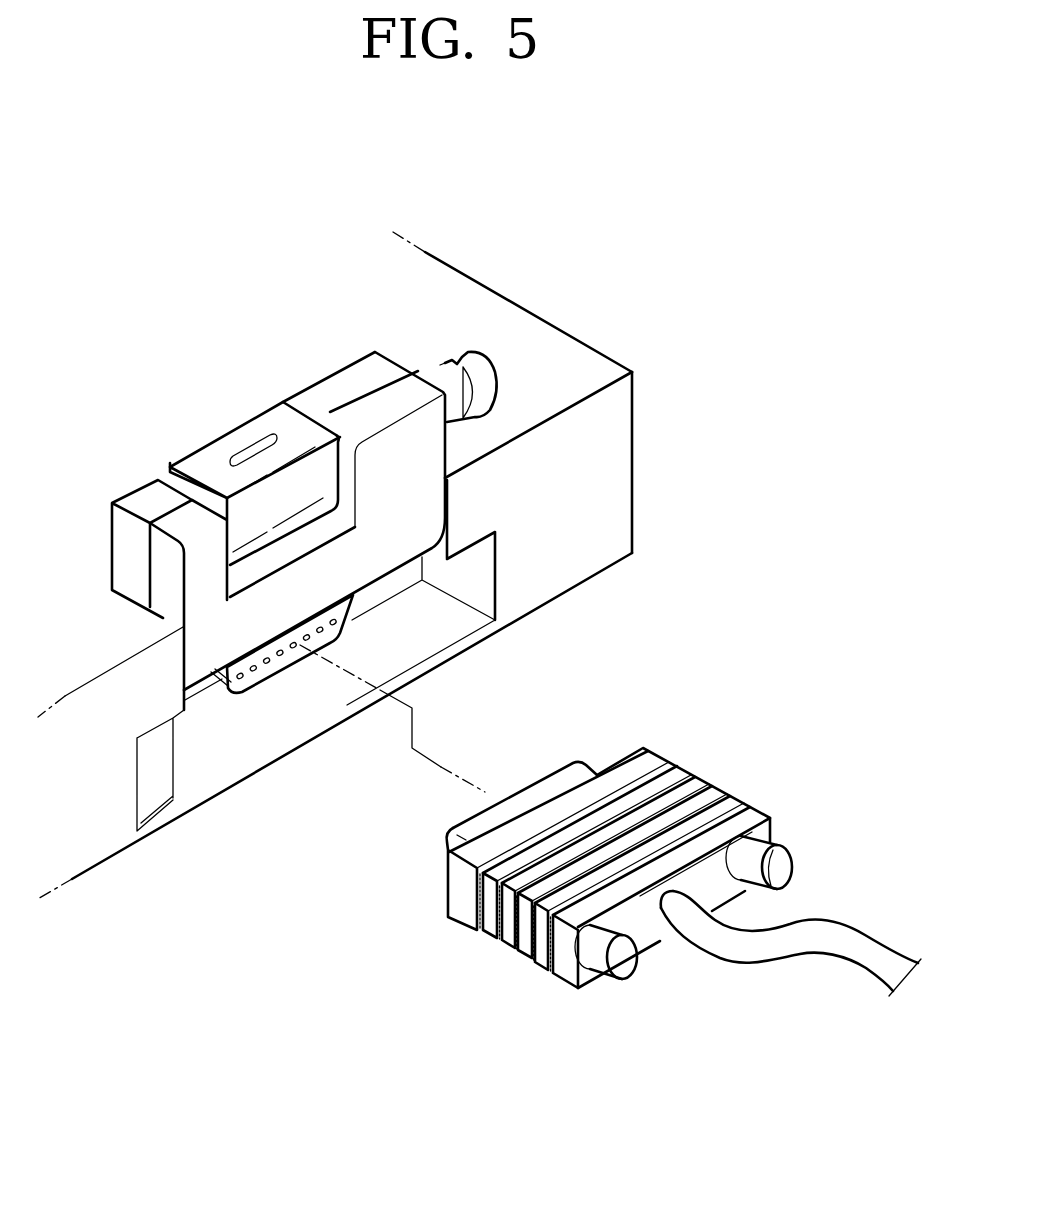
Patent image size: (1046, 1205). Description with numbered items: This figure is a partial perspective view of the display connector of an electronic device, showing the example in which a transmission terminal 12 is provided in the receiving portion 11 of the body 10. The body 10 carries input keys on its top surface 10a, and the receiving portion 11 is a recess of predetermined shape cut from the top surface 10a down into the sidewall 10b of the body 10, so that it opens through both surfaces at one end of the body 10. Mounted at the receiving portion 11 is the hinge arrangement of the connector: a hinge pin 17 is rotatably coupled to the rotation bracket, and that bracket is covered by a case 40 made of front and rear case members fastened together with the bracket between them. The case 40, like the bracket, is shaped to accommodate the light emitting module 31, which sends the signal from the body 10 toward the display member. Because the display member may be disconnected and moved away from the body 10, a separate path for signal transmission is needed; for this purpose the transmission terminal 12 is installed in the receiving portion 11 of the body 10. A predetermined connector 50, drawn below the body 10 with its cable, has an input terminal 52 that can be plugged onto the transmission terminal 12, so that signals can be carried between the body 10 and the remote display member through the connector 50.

The body 10 is at (398, 566).
The top surface 10a is at (518, 312).
The sidewall 10b is at (622, 483).
The receiving portion 11 is at (487, 580).
The transmission terminal 12 is at (250, 680).
The hinge pin 17 is at (436, 344).
The light emitting module 31 is at (233, 437).
The case 40 is at (138, 500).
The connector 50 is at (684, 846).
The input terminal 52 is at (540, 777).